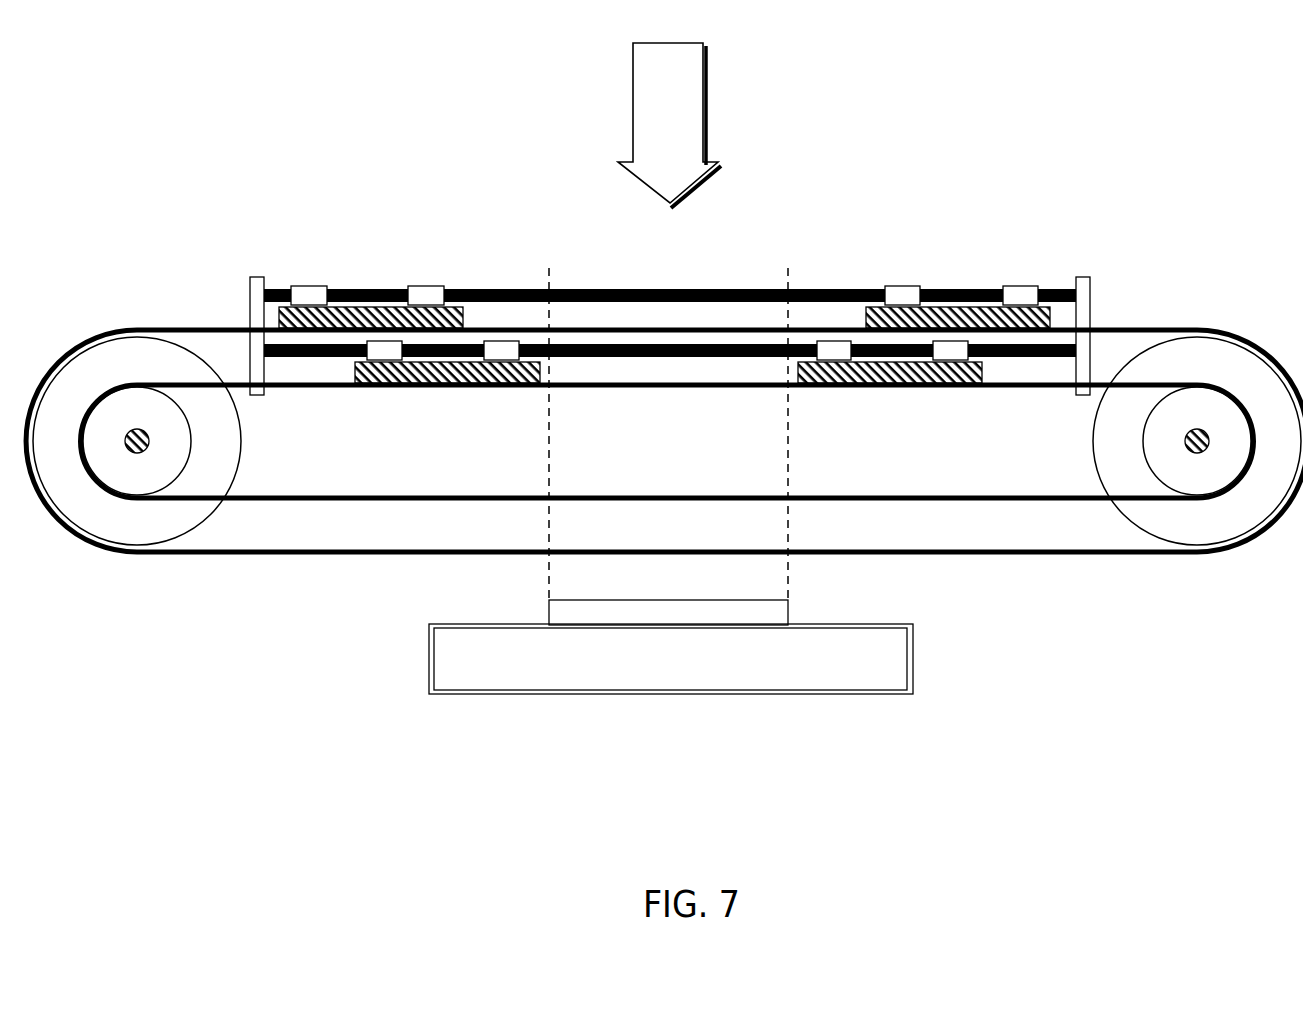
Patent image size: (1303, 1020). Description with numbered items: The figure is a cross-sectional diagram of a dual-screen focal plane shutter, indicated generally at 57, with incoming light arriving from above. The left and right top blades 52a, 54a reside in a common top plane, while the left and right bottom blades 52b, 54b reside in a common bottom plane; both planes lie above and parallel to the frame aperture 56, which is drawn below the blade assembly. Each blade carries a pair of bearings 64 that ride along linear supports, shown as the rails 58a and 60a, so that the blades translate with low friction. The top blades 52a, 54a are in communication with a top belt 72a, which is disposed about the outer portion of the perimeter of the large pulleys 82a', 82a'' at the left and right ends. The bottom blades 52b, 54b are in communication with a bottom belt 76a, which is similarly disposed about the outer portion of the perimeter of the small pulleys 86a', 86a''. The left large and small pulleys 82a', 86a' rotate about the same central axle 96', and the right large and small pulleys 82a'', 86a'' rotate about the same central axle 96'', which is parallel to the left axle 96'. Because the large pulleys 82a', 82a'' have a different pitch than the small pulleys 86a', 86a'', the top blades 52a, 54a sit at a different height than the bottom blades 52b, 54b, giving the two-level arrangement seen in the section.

The light exposure station 57 is at (1070, 252).
The linear support 58a is at (563, 288).
The linear support 60a is at (662, 358).
The bearings 64 is at (318, 285).
The left top blade 52a is at (465, 310).
The left bottom blade 52b is at (357, 365).
The right top blade 54a is at (866, 309).
The right bottom blade 54b is at (982, 366).
The top belt 72a is at (403, 556).
The bottom belt 76a is at (407, 495).
The large pulley 82a' is at (137, 412).
The large pulley 82a'' is at (1197, 412).
The small pulley 86a' is at (167, 494).
The small pulley 86a'' is at (1168, 494).
The central axle 96' is at (217, 454).
The central axle 96'' is at (1118, 454).
The frame aperture 56 is at (773, 602).